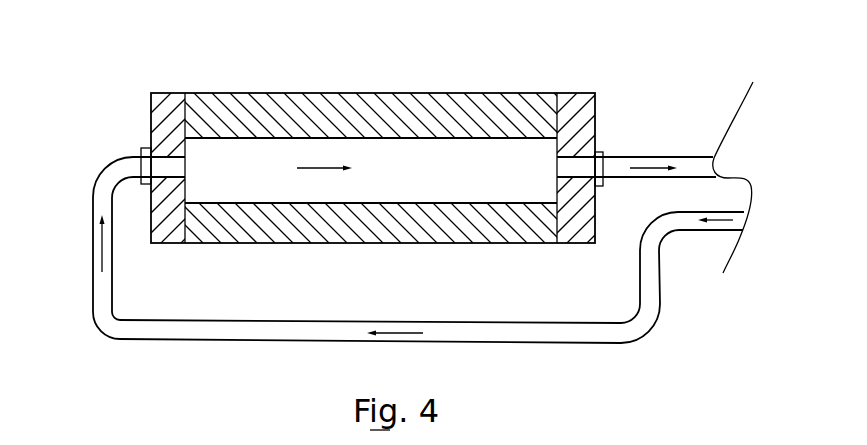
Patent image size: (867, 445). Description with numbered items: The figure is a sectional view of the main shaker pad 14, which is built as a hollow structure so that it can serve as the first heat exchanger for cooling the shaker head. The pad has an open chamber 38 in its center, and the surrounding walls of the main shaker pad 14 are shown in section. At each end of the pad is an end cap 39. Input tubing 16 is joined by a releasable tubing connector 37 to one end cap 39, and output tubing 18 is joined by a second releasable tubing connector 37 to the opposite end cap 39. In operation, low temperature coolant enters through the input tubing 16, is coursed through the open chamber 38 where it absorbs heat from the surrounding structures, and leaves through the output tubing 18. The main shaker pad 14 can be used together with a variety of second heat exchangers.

The main shaker pad 14 is at (423, 93).
The input tubing 16 is at (532, 345).
The output tubing 18 is at (665, 157).
The releasable tubing connector 37 is at (140, 148).
The open chamber 38 is at (312, 150).
The end cap 39 is at (172, 93).